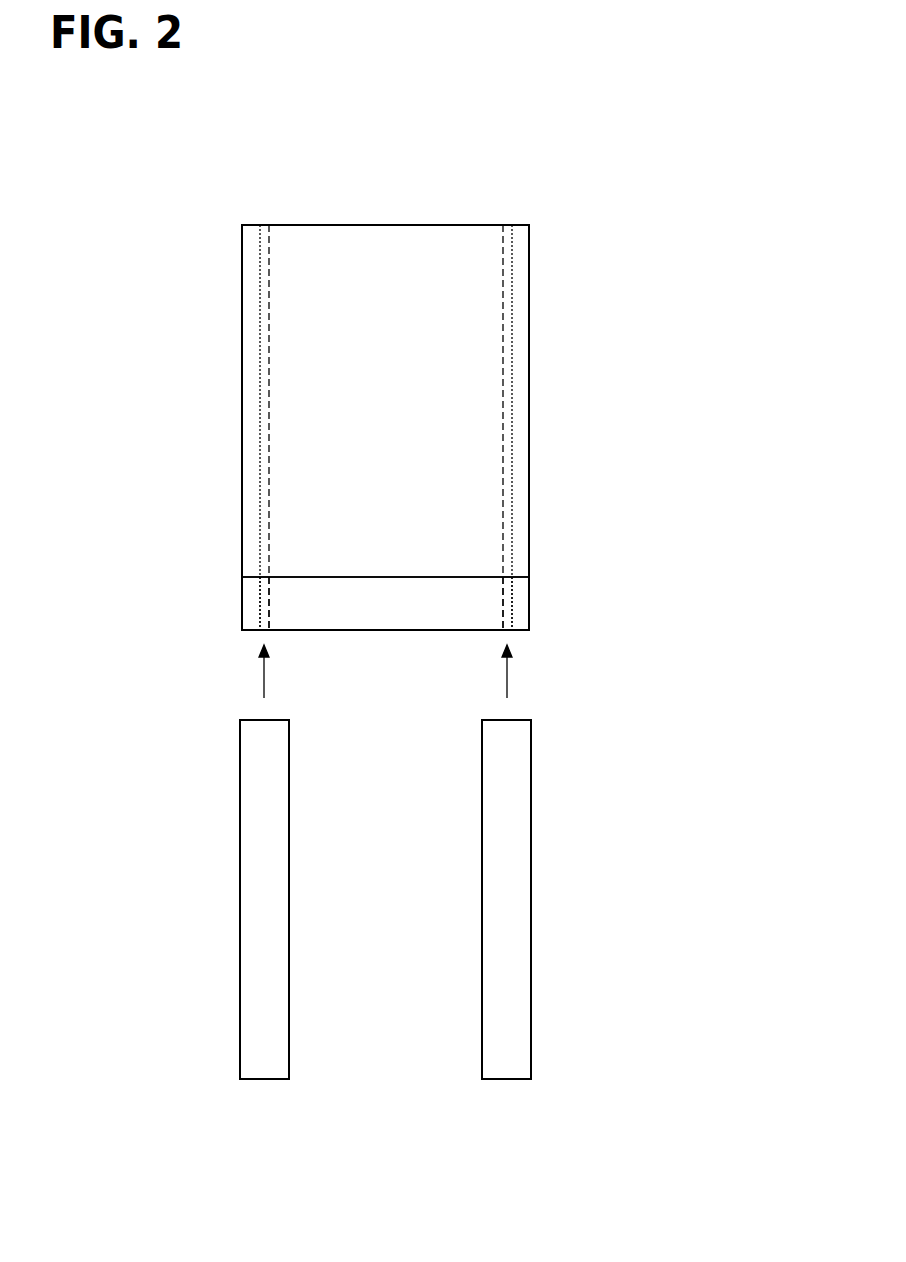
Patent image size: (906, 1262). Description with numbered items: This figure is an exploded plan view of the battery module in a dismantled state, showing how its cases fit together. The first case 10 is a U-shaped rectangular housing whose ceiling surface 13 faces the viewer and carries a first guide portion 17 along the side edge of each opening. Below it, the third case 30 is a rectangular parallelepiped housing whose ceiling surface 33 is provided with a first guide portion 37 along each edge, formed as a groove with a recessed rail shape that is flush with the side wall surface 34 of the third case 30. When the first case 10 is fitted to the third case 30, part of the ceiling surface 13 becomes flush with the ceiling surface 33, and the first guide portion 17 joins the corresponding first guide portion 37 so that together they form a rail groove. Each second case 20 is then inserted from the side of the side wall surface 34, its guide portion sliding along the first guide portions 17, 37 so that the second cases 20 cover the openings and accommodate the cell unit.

The first case 10 is at (623, 237).
The ceiling surface of the first case 13 is at (529, 333).
The first guide portion 17 is at (260, 358).
The second case 20 is at (220, 840).
The third case 30 is at (232, 595).
The ceiling surface of the third case 33 is at (520, 593).
The side wall surface of the third case 34 is at (385, 630).
The first guide portion of the third case 37 is at (262, 615).